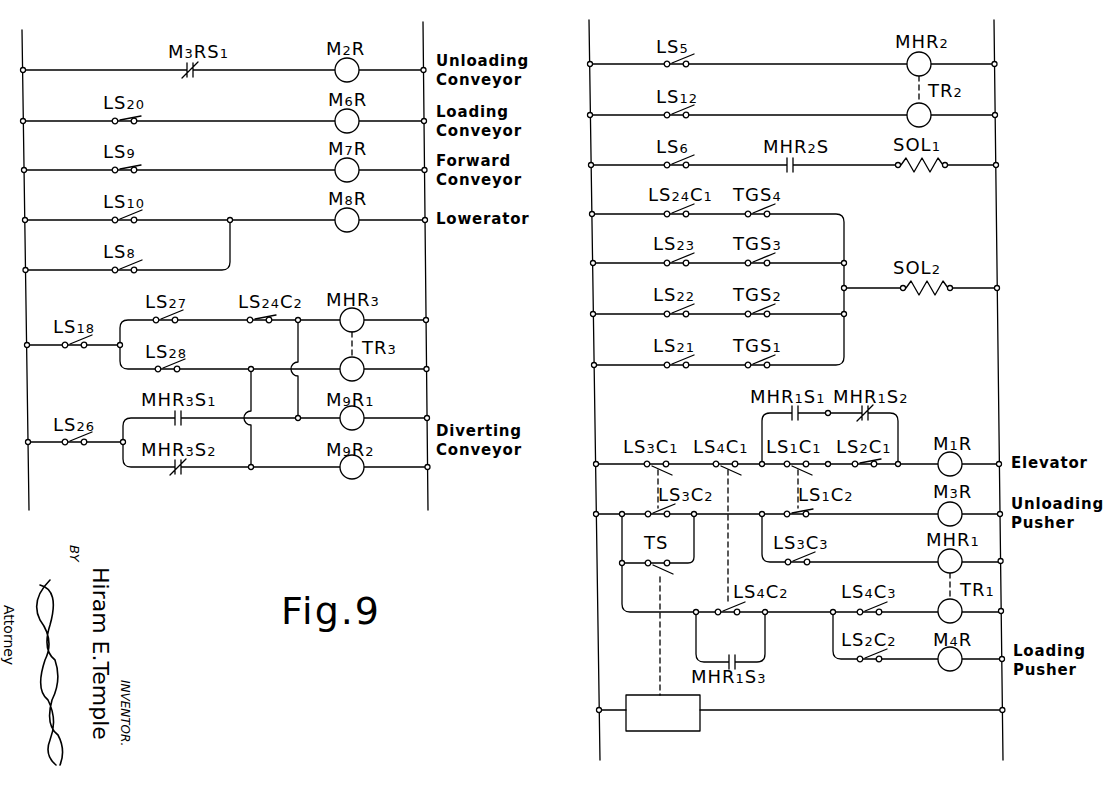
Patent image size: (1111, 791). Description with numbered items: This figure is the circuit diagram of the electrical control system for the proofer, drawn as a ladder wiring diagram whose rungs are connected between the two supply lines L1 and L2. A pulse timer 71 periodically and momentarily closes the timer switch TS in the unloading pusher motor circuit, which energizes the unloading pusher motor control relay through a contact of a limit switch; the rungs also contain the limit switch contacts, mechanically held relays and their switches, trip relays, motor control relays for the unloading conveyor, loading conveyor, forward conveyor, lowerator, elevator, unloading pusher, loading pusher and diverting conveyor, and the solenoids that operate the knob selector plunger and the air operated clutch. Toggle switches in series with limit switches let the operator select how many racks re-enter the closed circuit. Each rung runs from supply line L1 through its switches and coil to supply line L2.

The pulse timer 71 is at (700, 731).
The power line L1 is at (323, 392).
The power line L2 is at (705, 390).